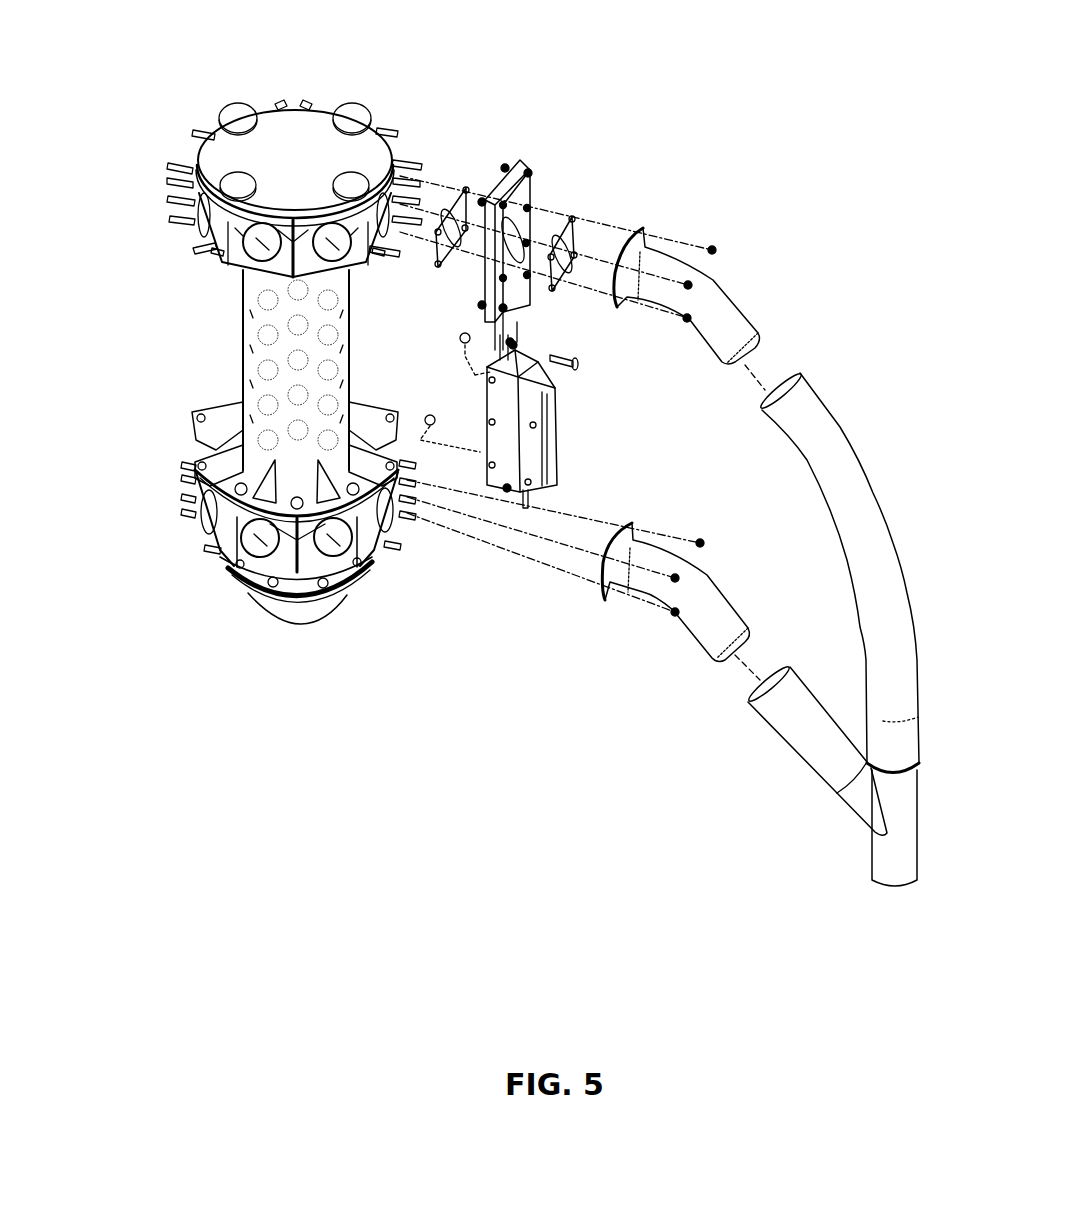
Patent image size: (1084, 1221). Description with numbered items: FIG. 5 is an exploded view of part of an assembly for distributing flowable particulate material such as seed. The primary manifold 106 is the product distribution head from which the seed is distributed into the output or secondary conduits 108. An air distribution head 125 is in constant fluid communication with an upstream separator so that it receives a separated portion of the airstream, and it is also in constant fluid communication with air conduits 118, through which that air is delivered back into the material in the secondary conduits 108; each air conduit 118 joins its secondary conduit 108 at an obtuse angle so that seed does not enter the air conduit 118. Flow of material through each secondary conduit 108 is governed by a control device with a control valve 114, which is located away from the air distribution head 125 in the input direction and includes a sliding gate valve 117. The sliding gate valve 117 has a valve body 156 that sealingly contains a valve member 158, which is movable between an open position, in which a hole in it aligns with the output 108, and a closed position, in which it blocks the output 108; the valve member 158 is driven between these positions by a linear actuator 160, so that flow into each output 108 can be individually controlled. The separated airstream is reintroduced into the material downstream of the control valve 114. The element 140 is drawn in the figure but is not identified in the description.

The primary manifold 106 is at (443, 96).
The perforated cylinder 140 is at (240, 355).
The air distribution head 125 is at (175, 580).
The sliding gate valve 117 is at (524, 170).
The control valve 114 is at (569, 171).
The valve body 156 is at (530, 218).
The valve member 158 is at (525, 318).
The linear actuator 160 is at (556, 441).
The secondary conduit 108 is at (745, 325).
The air conduit 118 is at (768, 735).